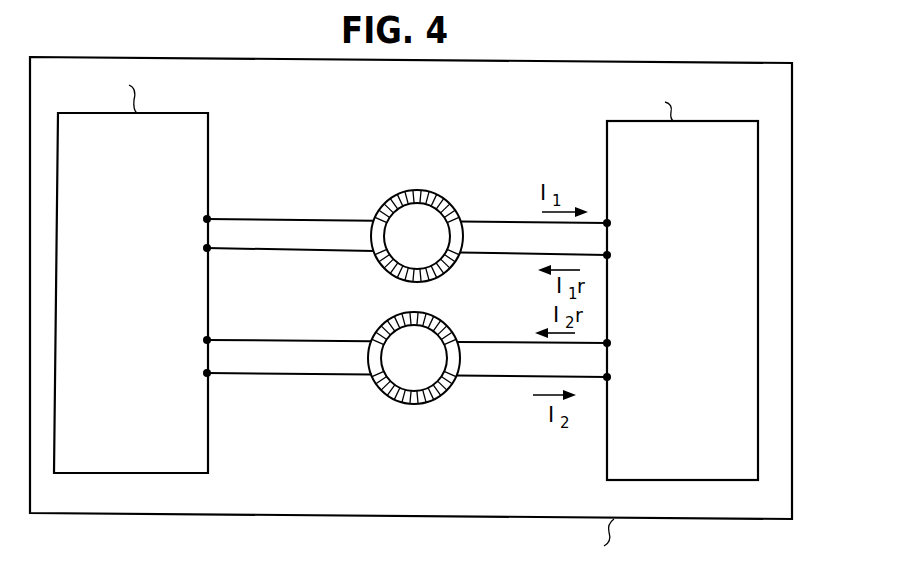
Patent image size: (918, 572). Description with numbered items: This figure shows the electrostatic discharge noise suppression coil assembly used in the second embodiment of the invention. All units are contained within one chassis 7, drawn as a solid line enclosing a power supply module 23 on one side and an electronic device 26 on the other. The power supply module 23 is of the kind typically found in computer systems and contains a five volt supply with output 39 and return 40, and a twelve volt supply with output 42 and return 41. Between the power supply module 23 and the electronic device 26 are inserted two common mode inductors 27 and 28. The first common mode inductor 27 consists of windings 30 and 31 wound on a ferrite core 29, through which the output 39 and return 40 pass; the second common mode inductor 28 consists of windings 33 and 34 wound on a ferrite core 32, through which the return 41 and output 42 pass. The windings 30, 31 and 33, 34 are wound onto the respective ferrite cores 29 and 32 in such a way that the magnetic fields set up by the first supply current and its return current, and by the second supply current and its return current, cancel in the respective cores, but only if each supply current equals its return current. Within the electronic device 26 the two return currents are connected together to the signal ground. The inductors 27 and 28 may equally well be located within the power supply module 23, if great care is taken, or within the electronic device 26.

The chassis 7 is at (702, 519).
The power supply module 23 is at (185, 113).
The electronic device 26 is at (716, 121).
The common mode inductor 27 is at (434, 207).
The common mode inductor 28 is at (432, 396).
The ferrite core 29 is at (451, 241).
The winding 30 is at (449, 214).
The winding 31 is at (448, 259).
The ferrite core 32 is at (449, 363).
The winding 33 is at (446, 329).
The winding 34 is at (447, 387).
The output 39 is at (230, 219).
The return 40 is at (214, 250).
The return 41 is at (232, 340).
The output 42 is at (228, 376).